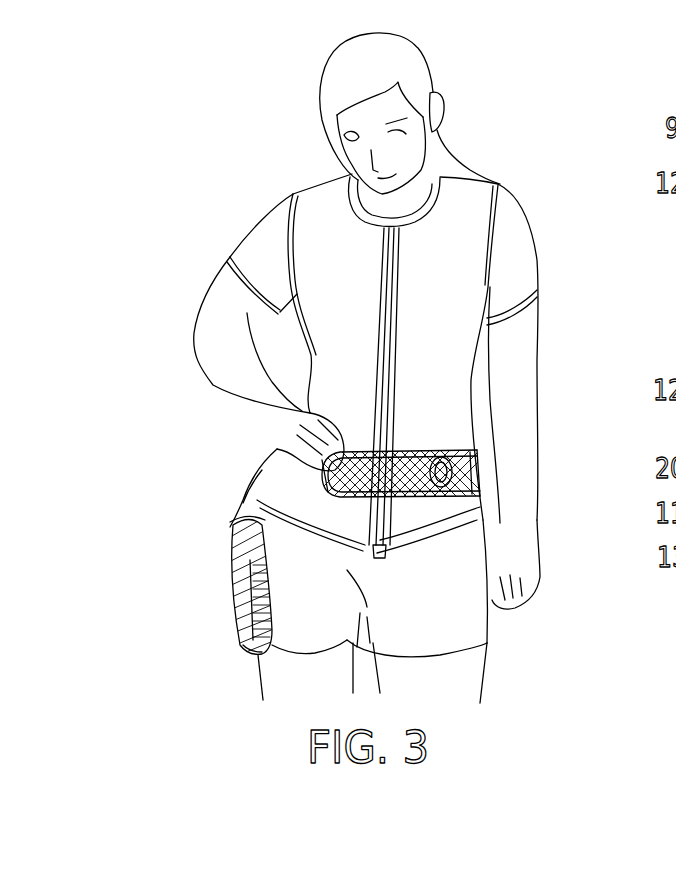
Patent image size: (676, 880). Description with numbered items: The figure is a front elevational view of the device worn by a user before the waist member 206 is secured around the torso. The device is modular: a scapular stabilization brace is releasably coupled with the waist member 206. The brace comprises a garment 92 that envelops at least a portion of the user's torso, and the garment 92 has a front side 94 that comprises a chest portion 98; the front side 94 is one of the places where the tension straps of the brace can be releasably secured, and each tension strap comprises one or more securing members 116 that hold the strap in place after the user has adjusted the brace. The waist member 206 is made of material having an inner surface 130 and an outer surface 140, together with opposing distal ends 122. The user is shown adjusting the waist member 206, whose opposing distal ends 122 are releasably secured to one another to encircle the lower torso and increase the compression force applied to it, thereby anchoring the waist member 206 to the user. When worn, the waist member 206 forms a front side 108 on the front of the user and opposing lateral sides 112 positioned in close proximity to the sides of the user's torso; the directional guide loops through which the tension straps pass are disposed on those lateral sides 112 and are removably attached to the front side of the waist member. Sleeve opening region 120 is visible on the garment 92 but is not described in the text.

The garment 92 is at (468, 184).
The front side of the garment 94 is at (320, 187).
The chest portion 98 is at (468, 290).
The armhole 120 is at (290, 228).
The front side of the waist member 108 is at (400, 484).
The opposing lateral sides 112 is at (280, 458).
The securing member 116 is at (232, 538).
The waist member 206 is at (243, 469).
The inner surface 130 is at (250, 564).
The opposing distal ends 122 is at (232, 637).
The outer surface 140 is at (258, 640).